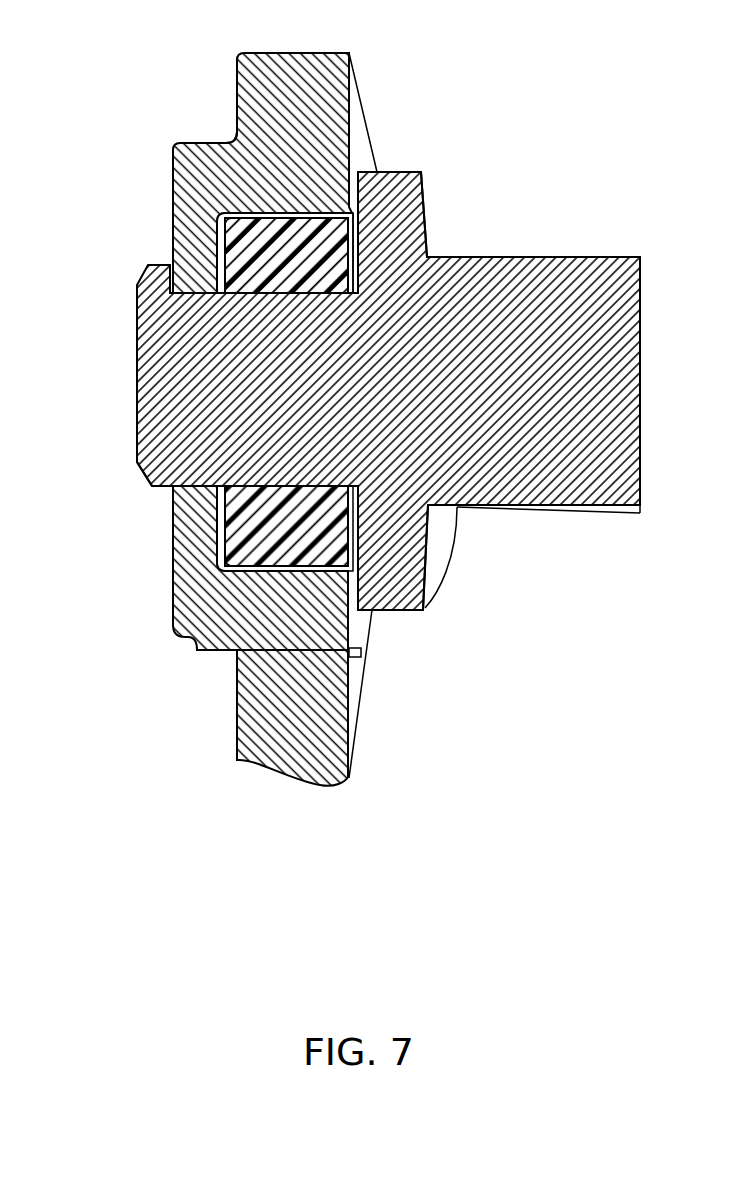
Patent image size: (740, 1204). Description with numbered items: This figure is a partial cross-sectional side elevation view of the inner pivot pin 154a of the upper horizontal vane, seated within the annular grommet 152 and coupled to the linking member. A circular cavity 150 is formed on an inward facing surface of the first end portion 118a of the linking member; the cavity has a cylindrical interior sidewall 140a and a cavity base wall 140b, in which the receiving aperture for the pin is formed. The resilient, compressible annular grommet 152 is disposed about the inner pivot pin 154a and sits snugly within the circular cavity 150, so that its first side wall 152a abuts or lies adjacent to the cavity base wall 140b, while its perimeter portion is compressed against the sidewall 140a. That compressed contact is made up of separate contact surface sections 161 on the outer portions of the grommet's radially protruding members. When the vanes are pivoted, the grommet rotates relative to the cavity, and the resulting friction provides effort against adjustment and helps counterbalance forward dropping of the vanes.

The first end portion 118a is at (297, 53).
The circular cavity 150 is at (353, 208).
The contact surface sections 161 is at (237, 133).
The interior sidewall 140a is at (218, 237).
The cavity base wall 140b is at (297, 263).
The first side wall 152a is at (227, 277).
The annular grommet 152 is at (253, 528).
The inner pivot pin 154a is at (168, 476).